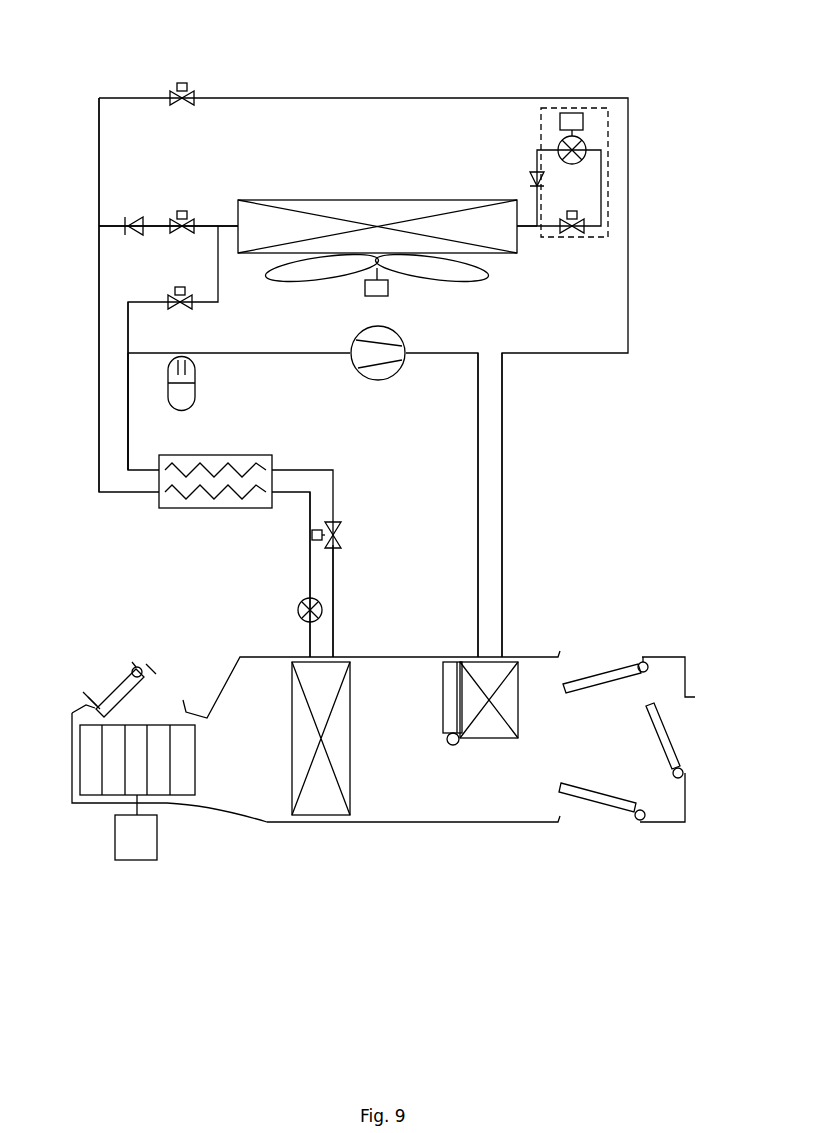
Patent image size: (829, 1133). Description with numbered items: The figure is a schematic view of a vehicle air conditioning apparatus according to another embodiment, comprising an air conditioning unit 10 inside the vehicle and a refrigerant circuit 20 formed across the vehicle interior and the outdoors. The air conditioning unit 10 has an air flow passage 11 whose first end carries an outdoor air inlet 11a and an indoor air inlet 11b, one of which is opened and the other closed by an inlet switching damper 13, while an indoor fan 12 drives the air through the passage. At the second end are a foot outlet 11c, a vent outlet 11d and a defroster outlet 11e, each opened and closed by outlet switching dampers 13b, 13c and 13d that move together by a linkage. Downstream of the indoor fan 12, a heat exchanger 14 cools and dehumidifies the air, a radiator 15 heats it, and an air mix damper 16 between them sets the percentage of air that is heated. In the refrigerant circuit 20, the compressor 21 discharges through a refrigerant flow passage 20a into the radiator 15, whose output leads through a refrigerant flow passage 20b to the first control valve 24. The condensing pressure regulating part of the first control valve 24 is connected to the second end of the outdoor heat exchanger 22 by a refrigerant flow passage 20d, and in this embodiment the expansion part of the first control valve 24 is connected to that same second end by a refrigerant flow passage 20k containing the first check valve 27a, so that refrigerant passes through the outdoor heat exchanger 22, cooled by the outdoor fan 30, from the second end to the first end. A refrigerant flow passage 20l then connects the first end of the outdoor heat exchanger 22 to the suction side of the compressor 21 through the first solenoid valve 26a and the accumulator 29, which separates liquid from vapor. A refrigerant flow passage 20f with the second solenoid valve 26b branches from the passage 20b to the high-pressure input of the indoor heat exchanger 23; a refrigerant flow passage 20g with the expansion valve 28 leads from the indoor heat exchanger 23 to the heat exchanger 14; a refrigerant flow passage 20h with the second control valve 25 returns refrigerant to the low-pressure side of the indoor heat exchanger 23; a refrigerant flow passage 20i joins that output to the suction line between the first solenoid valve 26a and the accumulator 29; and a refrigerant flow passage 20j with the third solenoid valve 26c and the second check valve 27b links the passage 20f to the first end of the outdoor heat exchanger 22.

The air conditioning unit 10 is at (680, 655).
The air flow passage 11 is at (254, 756).
The outdoor air inlet 11a is at (98, 688).
The indoor air inlet 11b is at (182, 688).
The foot outlet 11c is at (603, 648).
The vent outlet 11d is at (698, 731).
The defroster outlet 11e is at (598, 830).
The indoor fan 12 is at (78, 803).
The inlet switching damper 13 is at (130, 665).
The outlet switching damper 13b is at (632, 658).
The outlet switching damper 13c is at (686, 772).
The outlet switching damper 13d is at (640, 822).
The heat exchanger 14 is at (322, 823).
The radiator 15 is at (490, 740).
The air mix damper 16 is at (448, 745).
The refrigerant circuit 20 is at (452, 85).
The refrigerant flow passage 20a is at (476, 492).
The refrigerant flow passage 20b is at (504, 538).
The refrigerant flow passage 20d is at (530, 222).
The refrigerant flow passage 20f is at (97, 152).
The refrigerant flow passage 20g is at (308, 570).
The refrigerant flow passage 20h is at (336, 575).
The refrigerant flow passage 20i is at (126, 418).
The refrigerant flow passage 20j is at (112, 233).
The refrigerant flow passage 20k is at (546, 108).
The refrigerant flow passage 20l is at (126, 330).
The compressor 21 is at (378, 381).
The outdoor heat exchanger 22 is at (403, 199).
The indoor heat exchanger 23 is at (190, 509).
The first control valve 24 is at (600, 108).
The second control valve 25 is at (338, 522).
The first solenoid valve 26a is at (170, 296).
The second solenoid valve 26b is at (181, 82).
The third solenoid valve 26c is at (182, 210).
The first check valve 27a is at (545, 176).
The second check valve 27b is at (125, 218).
The expansion valve 28 is at (299, 606).
The accumulator 29 is at (197, 400).
The outdoor fan 30 is at (300, 262).